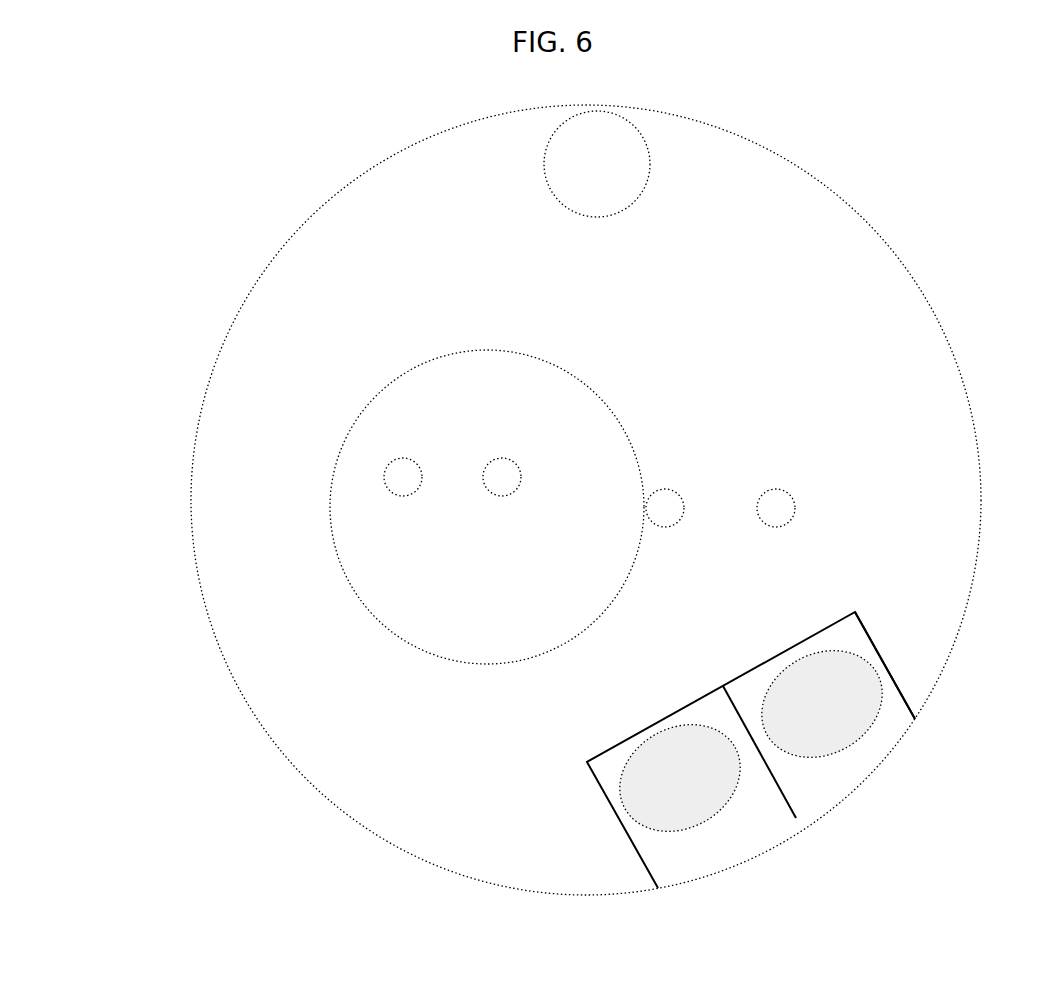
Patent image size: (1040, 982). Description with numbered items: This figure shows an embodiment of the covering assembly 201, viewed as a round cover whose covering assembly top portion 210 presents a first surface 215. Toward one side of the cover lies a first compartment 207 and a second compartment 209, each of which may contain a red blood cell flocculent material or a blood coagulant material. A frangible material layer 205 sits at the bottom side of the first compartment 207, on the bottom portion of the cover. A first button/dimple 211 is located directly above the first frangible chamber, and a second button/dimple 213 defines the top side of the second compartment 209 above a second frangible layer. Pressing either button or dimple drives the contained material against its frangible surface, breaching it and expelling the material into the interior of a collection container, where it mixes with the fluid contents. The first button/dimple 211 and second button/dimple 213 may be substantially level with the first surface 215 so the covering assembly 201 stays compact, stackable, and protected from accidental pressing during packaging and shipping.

The covering assembly 201 is at (243, 215).
The covering assembly top portion 210 is at (223, 476).
The first surface of the covering assembly top portion 215 is at (928, 421).
The frangible material layer 205 is at (795, 815).
The first compartment 207 is at (895, 710).
The first button/dimple 211 is at (858, 743).
The second compartment 209 is at (685, 858).
The second button/dimple 213 is at (707, 823).